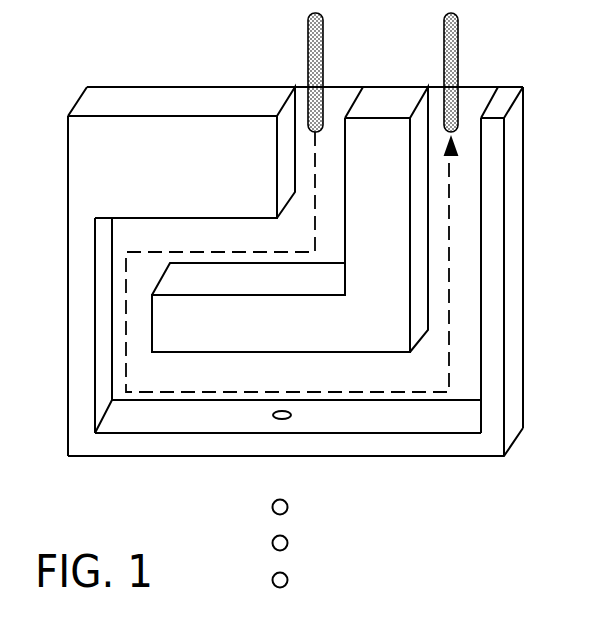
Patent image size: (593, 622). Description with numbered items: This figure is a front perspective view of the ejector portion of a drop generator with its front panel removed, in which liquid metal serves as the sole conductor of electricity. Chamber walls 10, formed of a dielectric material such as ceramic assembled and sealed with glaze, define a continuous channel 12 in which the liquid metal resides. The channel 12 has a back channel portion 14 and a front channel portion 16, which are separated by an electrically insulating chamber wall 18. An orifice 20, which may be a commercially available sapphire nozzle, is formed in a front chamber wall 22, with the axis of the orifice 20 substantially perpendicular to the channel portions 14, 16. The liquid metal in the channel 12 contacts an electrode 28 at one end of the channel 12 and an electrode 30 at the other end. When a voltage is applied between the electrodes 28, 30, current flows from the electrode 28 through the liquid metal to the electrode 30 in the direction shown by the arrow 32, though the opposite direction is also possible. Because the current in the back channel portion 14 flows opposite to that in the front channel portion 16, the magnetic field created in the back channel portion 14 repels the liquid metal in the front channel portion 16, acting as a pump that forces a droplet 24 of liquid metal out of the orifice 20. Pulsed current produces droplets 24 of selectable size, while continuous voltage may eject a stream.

The chamber walls 10 is at (495, 278).
The continuous channel 12 is at (475, 98).
The back channel portion 14 is at (160, 227).
The front channel portion 16 is at (353, 362).
The electrically insulating chamber wall 18 is at (170, 325).
The orifice 20 is at (290, 415).
The front chamber wall 22 is at (123, 443).
The droplet 24 is at (287, 580).
The electrode 28 is at (302, 68).
The electrode 30 is at (443, 68).
The arrow 32 is at (455, 145).